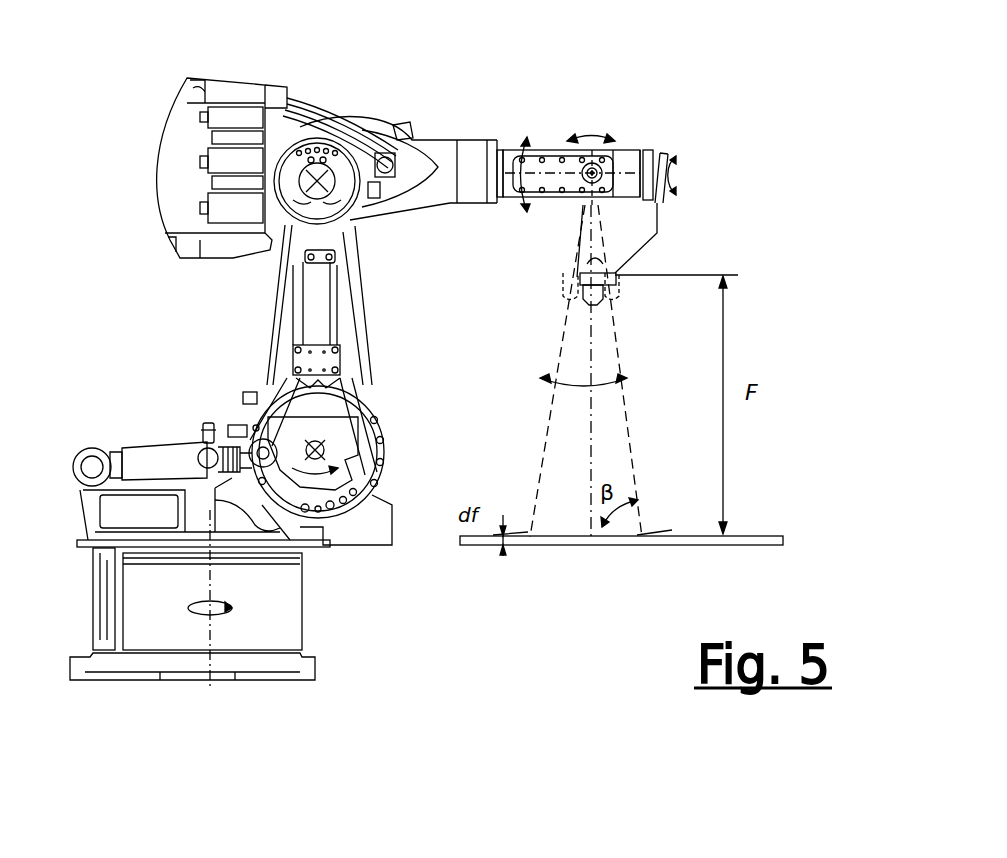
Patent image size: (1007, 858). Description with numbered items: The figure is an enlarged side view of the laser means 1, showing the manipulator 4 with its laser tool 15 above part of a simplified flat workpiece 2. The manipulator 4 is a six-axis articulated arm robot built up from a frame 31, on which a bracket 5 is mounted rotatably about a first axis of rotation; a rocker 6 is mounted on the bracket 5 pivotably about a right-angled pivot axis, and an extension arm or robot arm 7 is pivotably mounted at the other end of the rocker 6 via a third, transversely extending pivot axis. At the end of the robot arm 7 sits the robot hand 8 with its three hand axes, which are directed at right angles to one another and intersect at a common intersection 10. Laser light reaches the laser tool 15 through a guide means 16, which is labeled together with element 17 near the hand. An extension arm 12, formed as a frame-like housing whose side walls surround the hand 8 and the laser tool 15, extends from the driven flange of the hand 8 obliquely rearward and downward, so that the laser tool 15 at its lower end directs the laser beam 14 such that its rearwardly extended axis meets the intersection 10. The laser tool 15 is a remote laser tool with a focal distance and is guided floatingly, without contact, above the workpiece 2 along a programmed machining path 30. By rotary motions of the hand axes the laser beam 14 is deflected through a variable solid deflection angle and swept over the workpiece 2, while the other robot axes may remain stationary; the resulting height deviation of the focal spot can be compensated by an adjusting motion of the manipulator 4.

The laser means 1 is at (758, 219).
The workpiece 2 is at (680, 549).
The manipulator 4 is at (150, 126).
The bracket 5 is at (148, 453).
The rocker 6 is at (313, 307).
The extension arm or robot arm 7 is at (436, 152).
The robot hand 8 is at (582, 268).
The intersection 10 is at (585, 168).
The extension arm 12 is at (628, 245).
The laser beam 14 is at (543, 452).
The laser tool 15 is at (582, 288).
The guide means 16 is at (668, 157).
The tool changer plate 17 is at (668, 157).
The machining path 30 is at (585, 536).
The frame 31 is at (270, 603).